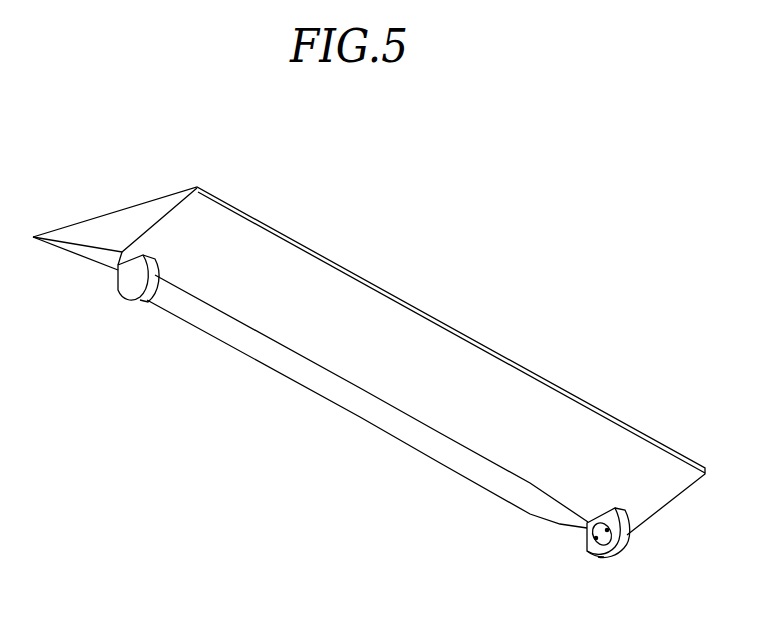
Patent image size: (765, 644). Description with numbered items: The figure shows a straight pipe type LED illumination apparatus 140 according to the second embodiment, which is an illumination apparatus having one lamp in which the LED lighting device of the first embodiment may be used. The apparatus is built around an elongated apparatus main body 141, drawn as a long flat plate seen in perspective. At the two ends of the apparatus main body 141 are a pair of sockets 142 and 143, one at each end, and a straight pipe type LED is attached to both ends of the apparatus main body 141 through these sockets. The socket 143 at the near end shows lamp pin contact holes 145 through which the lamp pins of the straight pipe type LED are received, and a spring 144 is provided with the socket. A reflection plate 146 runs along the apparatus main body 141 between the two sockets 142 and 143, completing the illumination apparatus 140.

The straight pipe type LED illumination apparatus 140 is at (415, 265).
The apparatus main body 141 is at (543, 382).
The socket 142 is at (130, 283).
The socket 143 is at (617, 550).
The spring 144 is at (589, 552).
The lamp pin contact hole 145 is at (590, 538).
The reflection plate 146 is at (235, 340).